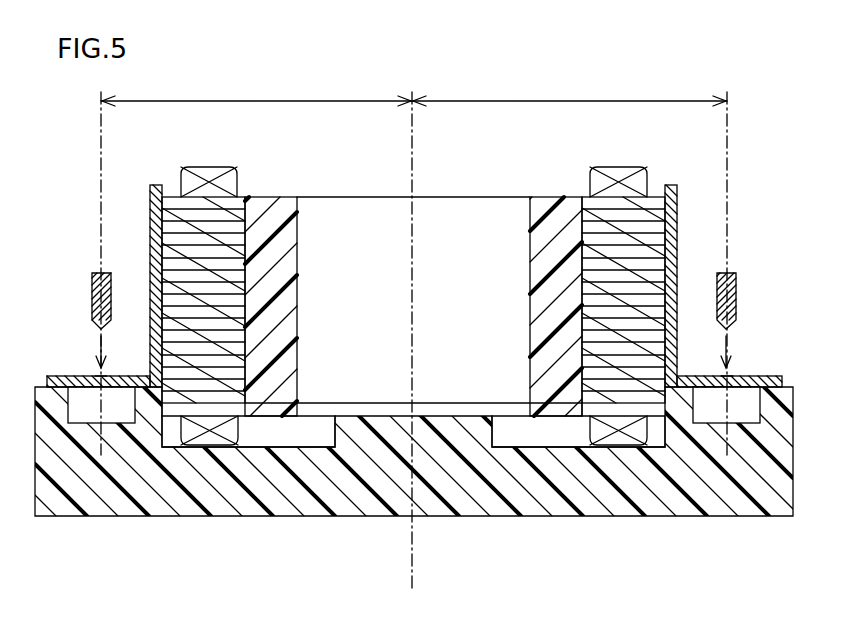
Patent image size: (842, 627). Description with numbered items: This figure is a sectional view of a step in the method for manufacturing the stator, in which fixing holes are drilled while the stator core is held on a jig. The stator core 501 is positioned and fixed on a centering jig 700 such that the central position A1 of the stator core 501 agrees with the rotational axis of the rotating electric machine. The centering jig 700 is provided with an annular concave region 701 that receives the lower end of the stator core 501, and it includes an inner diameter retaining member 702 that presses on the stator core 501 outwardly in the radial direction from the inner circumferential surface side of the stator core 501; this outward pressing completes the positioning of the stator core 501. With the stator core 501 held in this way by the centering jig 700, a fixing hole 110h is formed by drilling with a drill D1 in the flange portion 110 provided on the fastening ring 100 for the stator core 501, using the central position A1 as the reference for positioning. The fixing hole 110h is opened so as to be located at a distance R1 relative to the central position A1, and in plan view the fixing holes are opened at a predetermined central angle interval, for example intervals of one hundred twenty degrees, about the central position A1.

The centering jig 700 is at (316, 480).
The annular concave region 701 is at (267, 427).
The inner diameter retaining member 702 is at (268, 217).
The stator core 501 is at (195, 227).
The fastening ring 100 is at (149, 207).
The flange portion 110 is at (89, 378).
The fixing hole 110h is at (100, 376).
The drill D1 is at (92, 302).
The distance R1 is at (414, 266).
The central position A1 is at (413, 568).